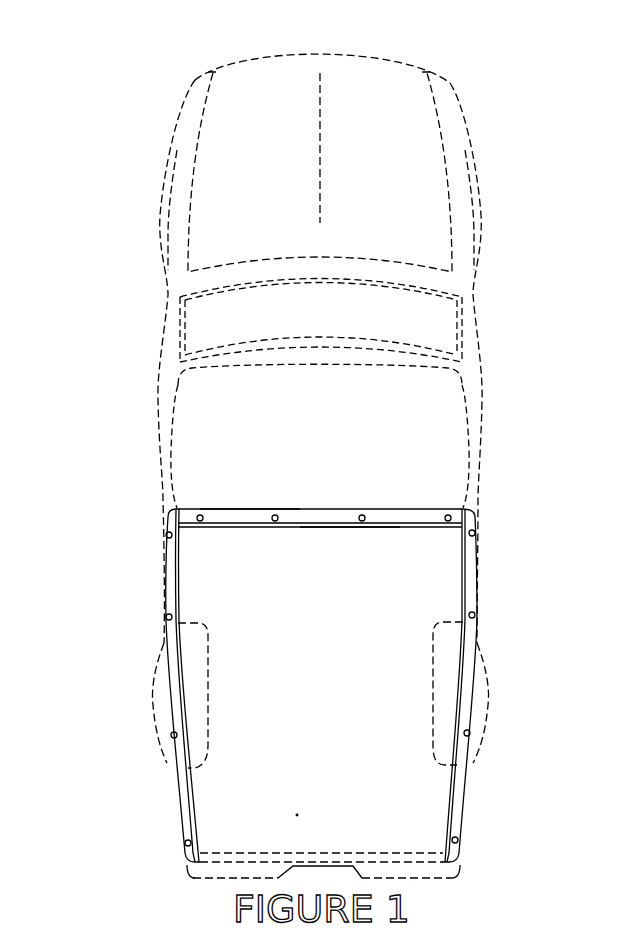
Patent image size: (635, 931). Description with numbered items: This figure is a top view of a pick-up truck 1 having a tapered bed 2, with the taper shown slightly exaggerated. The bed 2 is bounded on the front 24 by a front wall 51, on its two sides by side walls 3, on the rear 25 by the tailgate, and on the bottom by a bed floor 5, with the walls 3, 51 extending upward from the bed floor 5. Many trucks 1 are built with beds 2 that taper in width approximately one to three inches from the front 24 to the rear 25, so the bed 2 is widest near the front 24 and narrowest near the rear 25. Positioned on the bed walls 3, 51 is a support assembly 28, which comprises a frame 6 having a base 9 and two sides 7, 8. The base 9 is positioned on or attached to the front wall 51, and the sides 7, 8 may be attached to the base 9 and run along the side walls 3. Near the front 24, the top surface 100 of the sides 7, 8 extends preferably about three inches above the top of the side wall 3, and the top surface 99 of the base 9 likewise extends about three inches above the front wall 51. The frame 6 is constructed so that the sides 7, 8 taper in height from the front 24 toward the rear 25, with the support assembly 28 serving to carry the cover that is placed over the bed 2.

The pick-up truck 1 is at (139, 92).
The bed 2 is at (316, 780).
The side walls 3 is at (167, 603).
The bed floor 5 is at (398, 760).
The frame 6 is at (354, 628).
The side 7 is at (173, 705).
The side 8 is at (473, 667).
The base 9 is at (303, 522).
The front 24 is at (422, 507).
The rear 25 is at (418, 842).
The support assembly 28 is at (354, 685).
The front wall 51 is at (247, 508).
The top surface of base 99 is at (323, 527).
The top surface of sides 100 is at (173, 577).